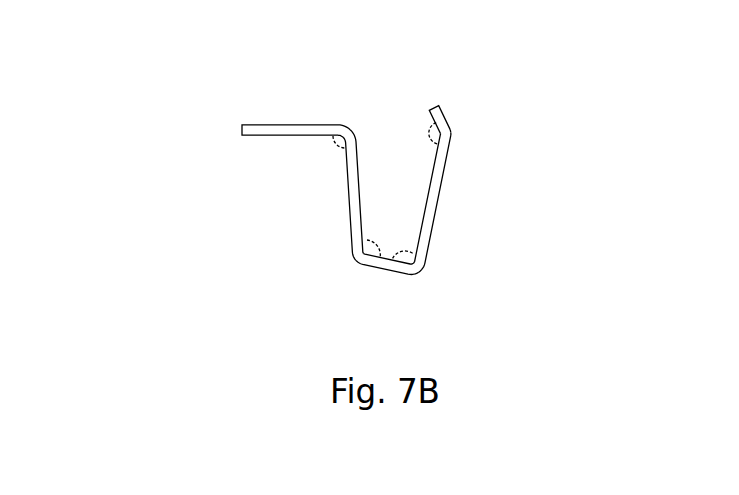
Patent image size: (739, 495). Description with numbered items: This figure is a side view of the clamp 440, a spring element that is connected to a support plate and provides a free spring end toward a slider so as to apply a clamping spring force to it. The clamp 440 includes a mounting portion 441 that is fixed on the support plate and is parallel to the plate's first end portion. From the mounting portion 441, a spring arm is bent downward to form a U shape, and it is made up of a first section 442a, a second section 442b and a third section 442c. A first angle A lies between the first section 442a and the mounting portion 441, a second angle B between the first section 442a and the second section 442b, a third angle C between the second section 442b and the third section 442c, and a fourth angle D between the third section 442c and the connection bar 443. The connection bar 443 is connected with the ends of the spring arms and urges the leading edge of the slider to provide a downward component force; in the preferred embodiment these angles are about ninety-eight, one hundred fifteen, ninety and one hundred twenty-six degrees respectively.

The clamp 440 is at (152, 106).
The mounting portion 441 is at (287, 128).
The first section 442a is at (354, 182).
The second section 442b is at (382, 265).
The third section 442c is at (437, 195).
The connection bar 443 is at (445, 120).